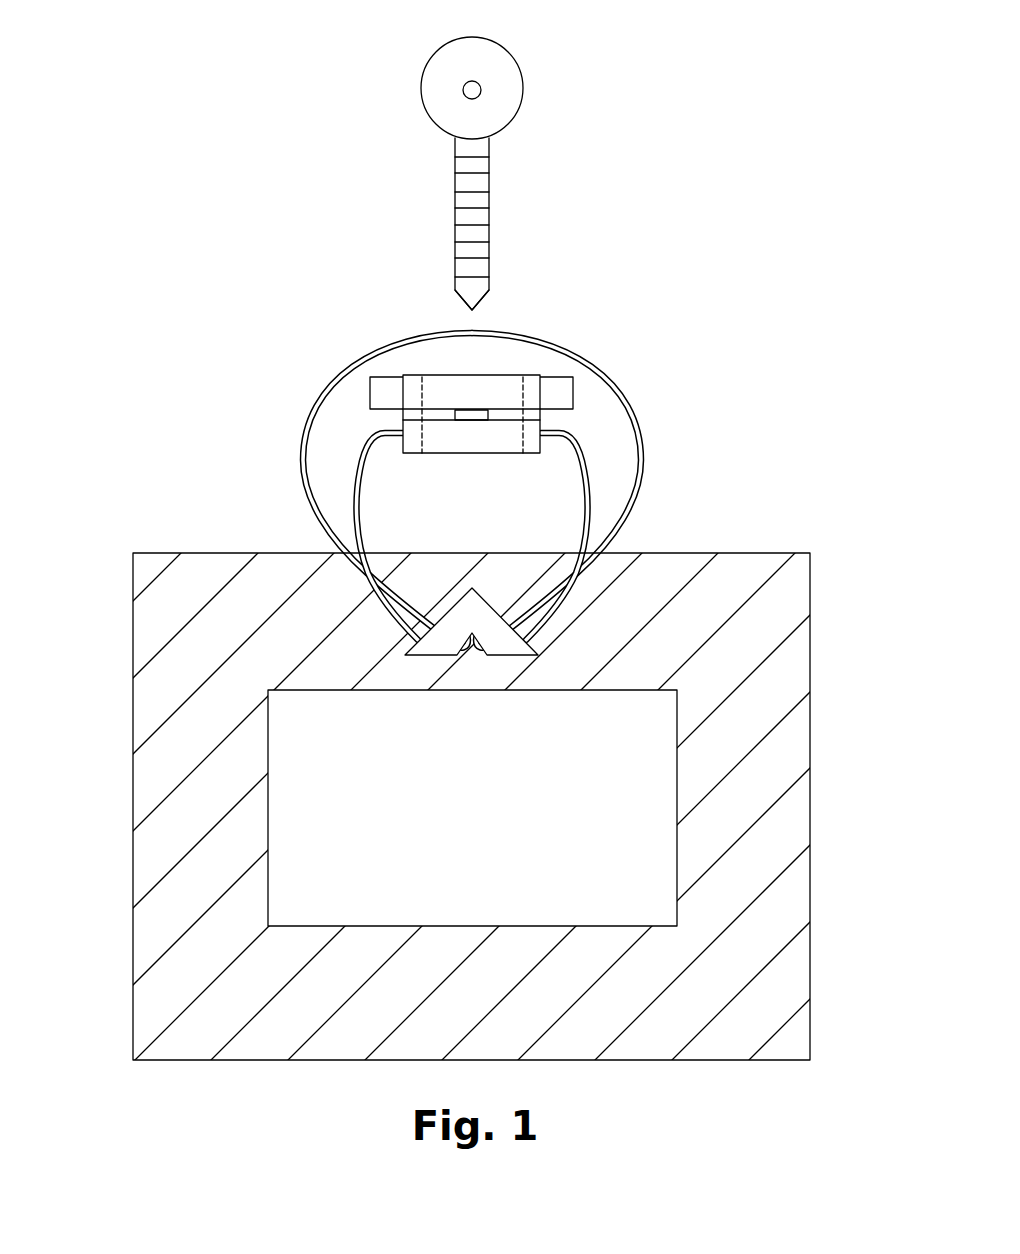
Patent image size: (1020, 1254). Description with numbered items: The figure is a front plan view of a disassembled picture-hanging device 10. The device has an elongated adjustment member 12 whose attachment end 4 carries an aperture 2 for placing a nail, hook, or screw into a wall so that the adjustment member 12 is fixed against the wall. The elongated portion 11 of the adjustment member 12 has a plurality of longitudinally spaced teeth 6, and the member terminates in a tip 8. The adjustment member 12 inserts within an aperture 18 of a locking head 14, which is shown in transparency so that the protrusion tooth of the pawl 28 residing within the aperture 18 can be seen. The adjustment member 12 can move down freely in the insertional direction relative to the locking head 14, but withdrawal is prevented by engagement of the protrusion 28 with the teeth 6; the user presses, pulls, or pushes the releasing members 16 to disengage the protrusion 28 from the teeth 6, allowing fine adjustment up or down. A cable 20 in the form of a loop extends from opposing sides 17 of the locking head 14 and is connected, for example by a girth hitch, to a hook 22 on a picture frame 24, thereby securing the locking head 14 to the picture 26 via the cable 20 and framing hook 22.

The aperture 2 is at (473, 79).
The attachment end 4 is at (524, 90).
The teeth 6 is at (483, 215).
The screw tip 8 is at (460, 297).
The picture-hanging device 10 is at (708, 172).
The elongated portion 11 is at (455, 200).
The adjustment member 12 is at (405, 65).
The locking head 14 is at (503, 353).
The releasing member 16 is at (368, 397).
The opposing sides 17 is at (375, 435).
The aperture 18 is at (507, 393).
The cable 20 is at (643, 452).
The hook 22 is at (472, 613).
The picture frame 24 is at (150, 605).
The picture 26 is at (790, 523).
The pawl 28 is at (458, 412).